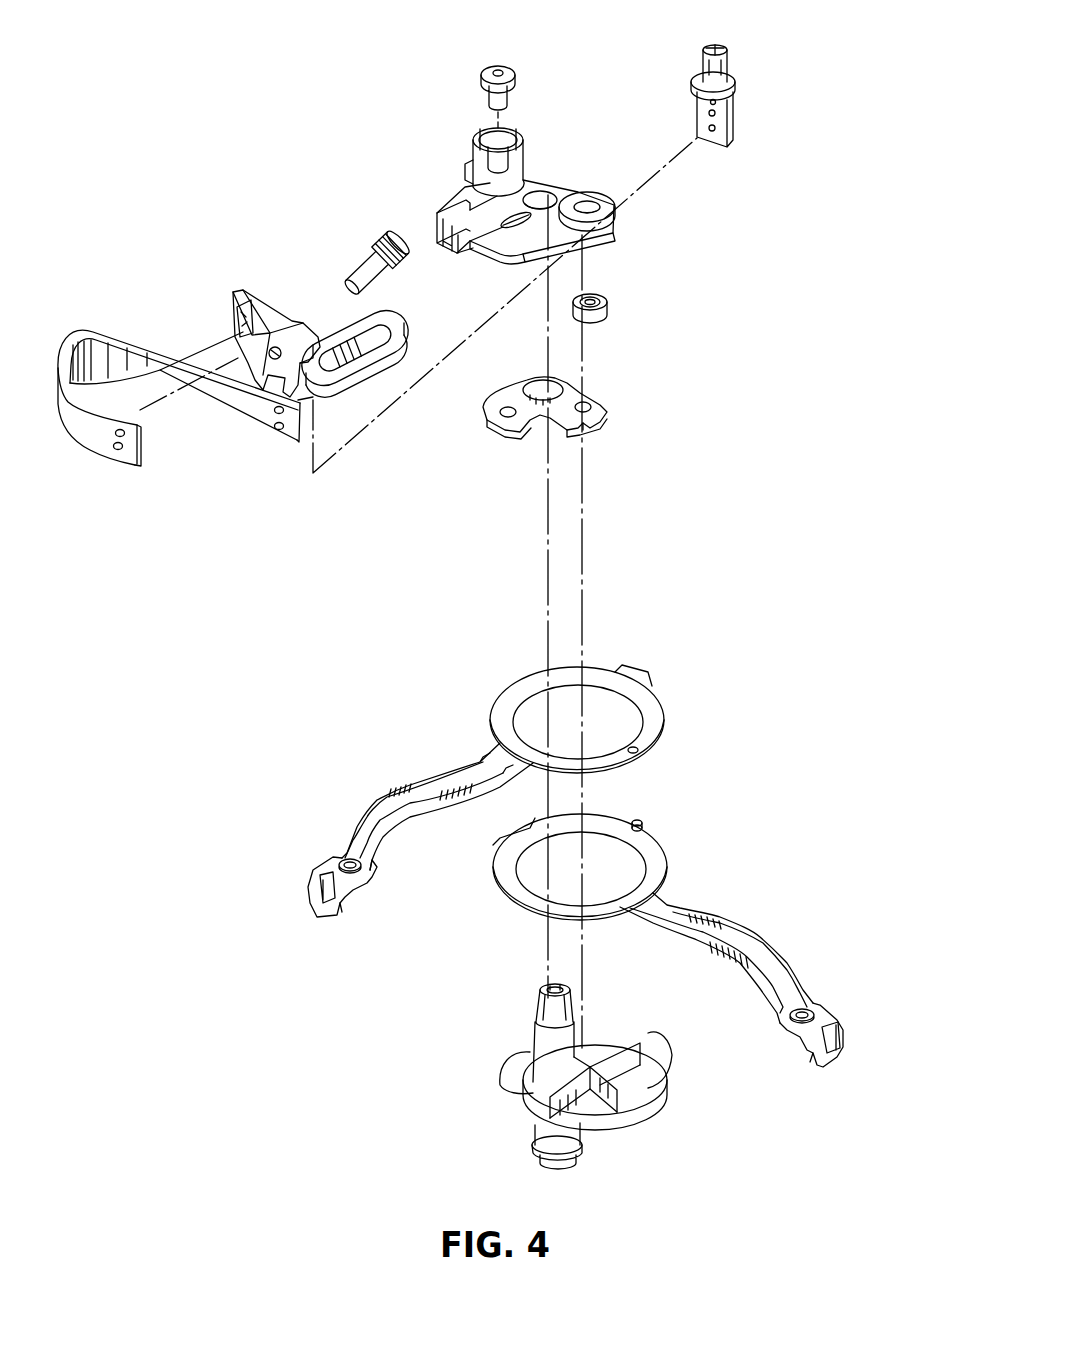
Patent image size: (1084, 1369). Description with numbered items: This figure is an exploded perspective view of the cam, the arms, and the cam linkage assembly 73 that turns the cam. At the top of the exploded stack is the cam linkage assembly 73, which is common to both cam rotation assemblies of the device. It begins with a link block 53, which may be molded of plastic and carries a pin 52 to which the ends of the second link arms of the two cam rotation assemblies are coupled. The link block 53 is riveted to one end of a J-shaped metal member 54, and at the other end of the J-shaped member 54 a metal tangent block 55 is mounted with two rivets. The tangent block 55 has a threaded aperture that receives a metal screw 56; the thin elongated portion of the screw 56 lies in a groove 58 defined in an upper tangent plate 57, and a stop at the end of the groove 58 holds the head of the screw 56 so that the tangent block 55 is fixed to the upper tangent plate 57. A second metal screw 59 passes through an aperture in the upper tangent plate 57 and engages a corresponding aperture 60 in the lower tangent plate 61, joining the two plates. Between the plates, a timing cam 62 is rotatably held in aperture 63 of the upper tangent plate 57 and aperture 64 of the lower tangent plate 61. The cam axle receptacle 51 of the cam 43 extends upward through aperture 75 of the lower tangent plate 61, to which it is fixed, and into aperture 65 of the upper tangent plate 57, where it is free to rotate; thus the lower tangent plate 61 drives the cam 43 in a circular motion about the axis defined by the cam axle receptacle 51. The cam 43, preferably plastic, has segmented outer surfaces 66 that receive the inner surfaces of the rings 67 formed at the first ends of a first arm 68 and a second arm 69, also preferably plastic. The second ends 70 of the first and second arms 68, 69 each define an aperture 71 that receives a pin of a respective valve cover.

The cam 43 is at (455, 1088).
The cam axle receptacle 51 is at (543, 1038).
The pin 52 is at (728, 50).
The link block 53 is at (737, 108).
The J-shaped metal member 54 is at (118, 330).
The tangent block 55 is at (262, 300).
The screw 56 is at (391, 242).
The upper tangent plate 57 is at (534, 178).
The groove 58 is at (447, 262).
The screw 59 is at (514, 80).
The aperture 60 is at (506, 418).
The lower tangent plate 61 is at (605, 405).
The timing cam 62 is at (608, 307).
The aperture 63 is at (600, 195).
The aperture 64 is at (600, 420).
The aperture 65 is at (556, 195).
The outer surfaces 66 is at (537, 1100).
The rings 67 is at (500, 708).
The first arm 68 is at (410, 745).
The second arm 69 is at (795, 895).
The second ends 70 is at (300, 848).
The apertures 71 is at (344, 858).
The cam linkage assembly 73 is at (253, 100).
The aperture 75 is at (530, 386).